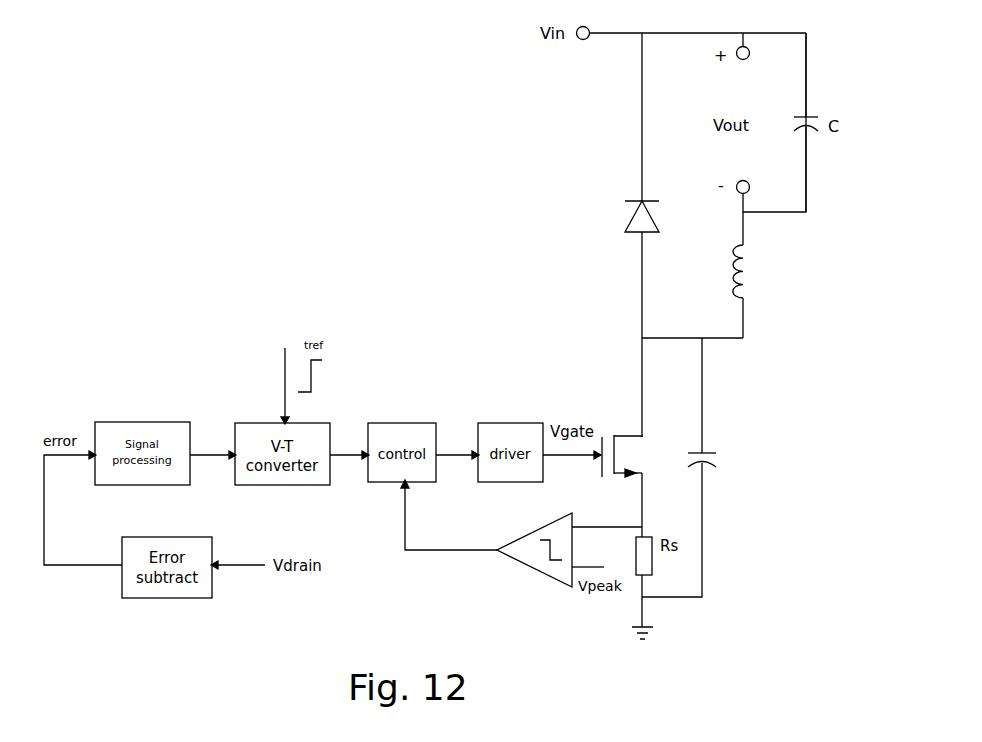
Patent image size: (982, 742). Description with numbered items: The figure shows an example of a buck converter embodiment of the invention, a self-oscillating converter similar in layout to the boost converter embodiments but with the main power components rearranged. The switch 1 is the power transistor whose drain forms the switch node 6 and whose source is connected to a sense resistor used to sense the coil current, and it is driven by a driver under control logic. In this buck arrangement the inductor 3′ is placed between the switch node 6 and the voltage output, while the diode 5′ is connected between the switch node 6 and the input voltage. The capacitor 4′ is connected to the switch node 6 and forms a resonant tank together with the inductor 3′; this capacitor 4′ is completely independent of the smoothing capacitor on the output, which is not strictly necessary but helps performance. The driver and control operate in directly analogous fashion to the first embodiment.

The diode 5′ is at (607, 197).
The switch node 6 is at (641, 320).
The switch 1 is at (605, 437).
The inductor 3′ is at (740, 277).
The capacitor 4′ is at (727, 443).